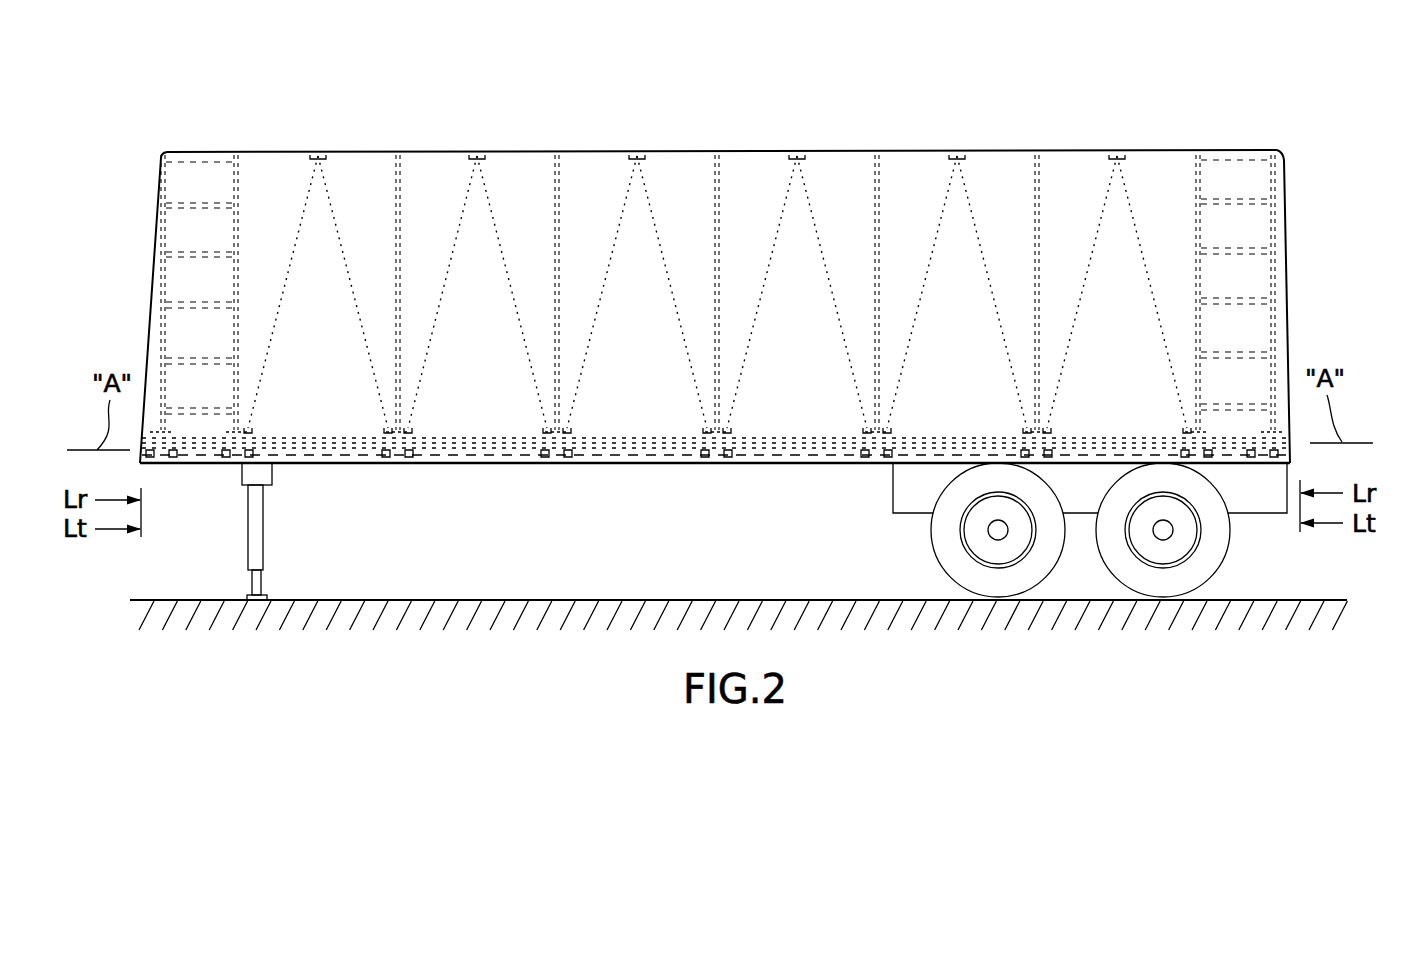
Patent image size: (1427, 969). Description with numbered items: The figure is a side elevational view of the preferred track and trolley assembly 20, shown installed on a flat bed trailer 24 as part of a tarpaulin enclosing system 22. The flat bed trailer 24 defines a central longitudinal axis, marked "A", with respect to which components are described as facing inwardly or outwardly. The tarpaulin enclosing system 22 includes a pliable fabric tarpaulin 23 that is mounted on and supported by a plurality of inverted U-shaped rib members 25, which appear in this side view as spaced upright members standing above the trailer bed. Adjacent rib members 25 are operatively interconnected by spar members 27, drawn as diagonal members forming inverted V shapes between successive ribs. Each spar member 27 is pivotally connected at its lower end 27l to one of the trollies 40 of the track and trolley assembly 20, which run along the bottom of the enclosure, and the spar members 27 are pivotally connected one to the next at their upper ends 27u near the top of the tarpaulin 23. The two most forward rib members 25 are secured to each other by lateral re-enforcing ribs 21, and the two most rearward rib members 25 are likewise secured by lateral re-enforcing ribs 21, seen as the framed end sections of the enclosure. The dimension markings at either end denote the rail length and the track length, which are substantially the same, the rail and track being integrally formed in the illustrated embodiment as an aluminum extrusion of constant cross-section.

The track and trolley assembly 20 is at (1322, 463).
The lateral re-enforcing ribs 21 is at (161, 158).
The tarpaulin enclosing system 22 is at (668, 138).
The pliable fabric tarpaulin 23 is at (683, 156).
The flat bed trailer 24 is at (304, 465).
The inverted U-shaped rib members 25 is at (400, 215).
The spar members 27 is at (342, 226).
The upper ends of spar members 27u is at (311, 157).
The lower ends of spar members 27l is at (380, 421).
The trollies 40 is at (167, 465).